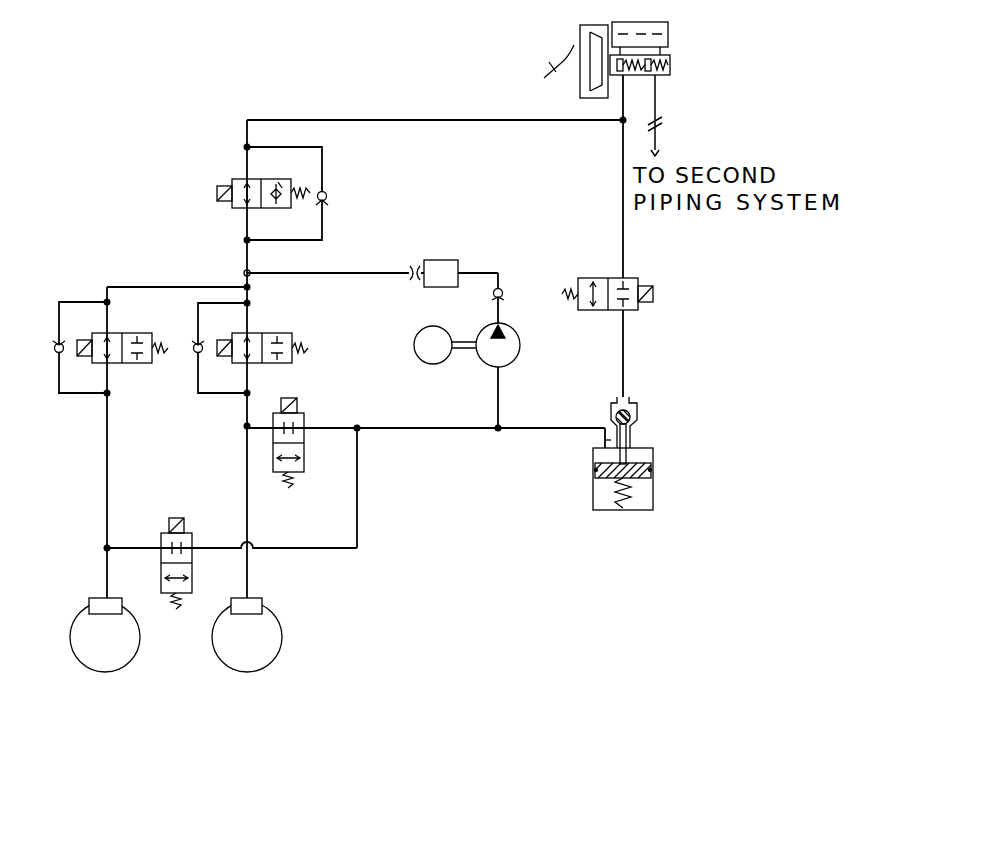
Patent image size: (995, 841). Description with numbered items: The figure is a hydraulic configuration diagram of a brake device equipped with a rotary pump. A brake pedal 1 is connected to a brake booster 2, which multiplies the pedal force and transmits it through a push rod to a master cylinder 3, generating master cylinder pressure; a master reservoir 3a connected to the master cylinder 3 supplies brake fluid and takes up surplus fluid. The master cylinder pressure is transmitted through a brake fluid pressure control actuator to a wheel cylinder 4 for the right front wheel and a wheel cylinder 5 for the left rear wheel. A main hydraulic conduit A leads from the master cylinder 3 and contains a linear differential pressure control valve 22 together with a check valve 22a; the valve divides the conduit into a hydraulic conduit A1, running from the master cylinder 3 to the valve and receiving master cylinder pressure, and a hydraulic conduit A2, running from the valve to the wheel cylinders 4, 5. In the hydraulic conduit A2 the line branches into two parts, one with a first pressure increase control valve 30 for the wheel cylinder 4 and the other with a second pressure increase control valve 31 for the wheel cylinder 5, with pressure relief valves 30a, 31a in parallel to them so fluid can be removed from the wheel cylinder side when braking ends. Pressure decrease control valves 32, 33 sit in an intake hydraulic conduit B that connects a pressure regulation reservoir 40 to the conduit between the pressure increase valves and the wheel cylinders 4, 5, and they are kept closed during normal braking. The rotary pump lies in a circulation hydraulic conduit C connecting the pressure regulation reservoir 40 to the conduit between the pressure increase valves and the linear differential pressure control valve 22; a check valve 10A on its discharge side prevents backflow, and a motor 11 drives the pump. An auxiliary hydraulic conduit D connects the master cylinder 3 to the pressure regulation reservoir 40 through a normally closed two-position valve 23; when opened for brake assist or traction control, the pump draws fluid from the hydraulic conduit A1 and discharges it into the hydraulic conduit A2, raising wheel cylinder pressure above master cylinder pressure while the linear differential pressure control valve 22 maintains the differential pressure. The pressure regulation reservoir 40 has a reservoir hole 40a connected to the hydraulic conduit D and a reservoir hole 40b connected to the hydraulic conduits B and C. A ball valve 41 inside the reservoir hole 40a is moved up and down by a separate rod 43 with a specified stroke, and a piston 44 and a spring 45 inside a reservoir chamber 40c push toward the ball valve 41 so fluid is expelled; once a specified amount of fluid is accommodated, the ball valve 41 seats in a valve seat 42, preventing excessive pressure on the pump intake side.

The brake pedal 1 is at (548, 70).
The brake booster 2 is at (578, 38).
The master cylinder 3 is at (668, 72).
The master reservoir 3a is at (668, 32).
The wheel cylinder 4 is at (89, 607).
The wheel cylinder 5 is at (231, 607).
The check valve 10A is at (504, 287).
The motor 11 is at (440, 364).
The linear differential pressure control valve 22 is at (235, 210).
The check valve 22a is at (330, 197).
The two-position valve 23 is at (608, 278).
The first pressure increase control valve 30 is at (128, 363).
The pressure relief valve 30a is at (57, 357).
The second pressure increase control valve 31 is at (265, 333).
The pressure relief valve 31a is at (195, 343).
The pressure decrease control valve 32 is at (161, 583).
The pressure decrease control valve 33 is at (304, 470).
The pressure regulation reservoir 40 is at (648, 458).
The reservoir hole 40a is at (627, 397).
The reservoir hole 40b is at (604, 442).
The reservoir chamber 40c is at (595, 456).
The ball valve 41 is at (632, 417).
The valve seat 42 is at (636, 430).
The rod 43 is at (628, 445).
The piston 44 is at (640, 480).
The spring 45 is at (640, 508).
The hydraulic conduit A is at (508, 122).
The hydraulic conduit A1 is at (318, 120).
The hydraulic conduit A2 is at (247, 258).
The hydraulic conduit B is at (432, 430).
The hydraulic conduit C is at (500, 395).
The hydraulic conduit D is at (623, 181).